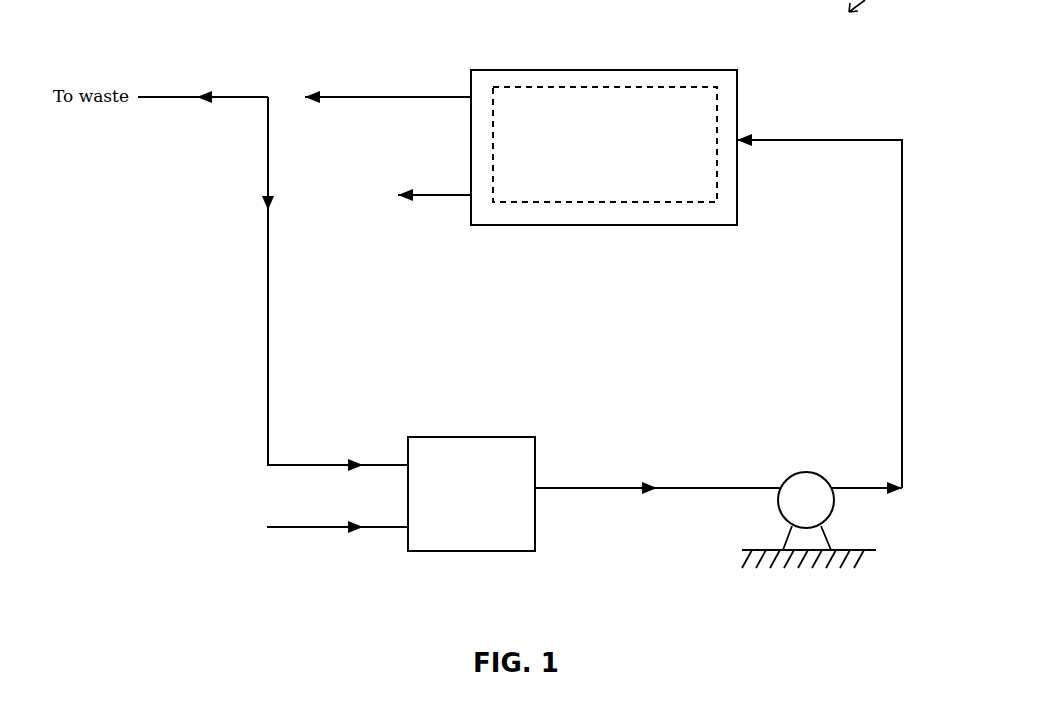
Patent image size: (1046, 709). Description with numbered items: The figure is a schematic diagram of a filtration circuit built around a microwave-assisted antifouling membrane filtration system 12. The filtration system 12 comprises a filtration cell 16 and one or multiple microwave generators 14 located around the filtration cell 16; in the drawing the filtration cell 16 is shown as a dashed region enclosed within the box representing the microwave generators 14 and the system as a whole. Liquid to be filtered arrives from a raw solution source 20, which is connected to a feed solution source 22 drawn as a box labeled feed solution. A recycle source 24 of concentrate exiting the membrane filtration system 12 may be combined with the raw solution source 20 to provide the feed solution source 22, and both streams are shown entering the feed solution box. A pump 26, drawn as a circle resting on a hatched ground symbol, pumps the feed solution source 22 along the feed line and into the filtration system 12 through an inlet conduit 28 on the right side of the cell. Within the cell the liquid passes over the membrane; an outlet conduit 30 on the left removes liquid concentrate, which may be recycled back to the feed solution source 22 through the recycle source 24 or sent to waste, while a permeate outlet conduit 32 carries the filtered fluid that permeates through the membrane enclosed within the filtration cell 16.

The microwave-assisted antifouling membrane filtration system 12 is at (662, 152).
The microwave generator 14 is at (660, 70).
The filtration cell 16 is at (550, 86).
The raw solution source 20 is at (310, 528).
The feed solution source 22 is at (420, 552).
The recycle source 24 is at (268, 297).
The pump 26 is at (793, 473).
The inlet conduit 28 is at (789, 141).
The outlet conduit 30 is at (405, 98).
The permeate outlet conduit 32 is at (445, 197).